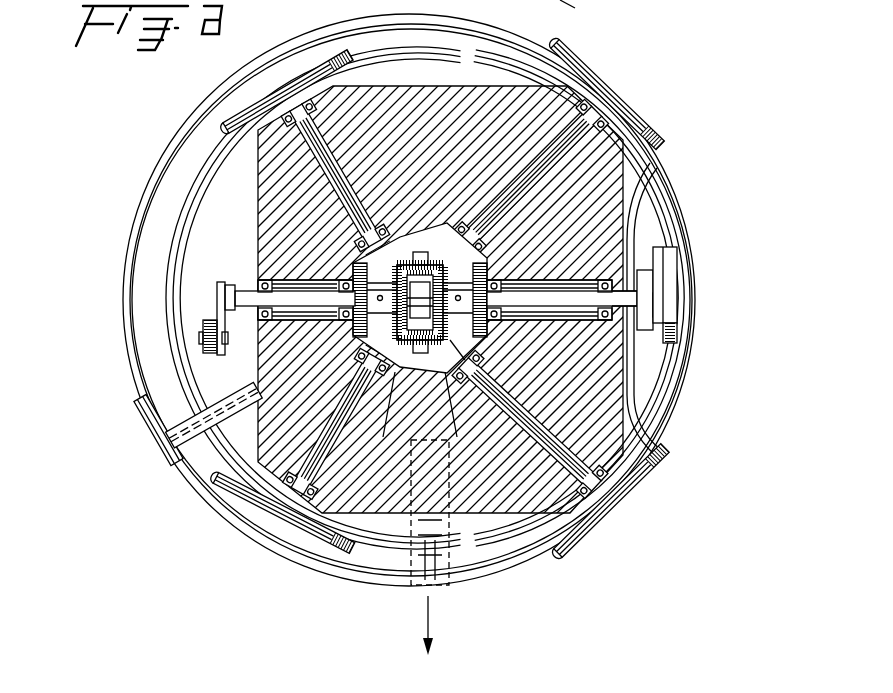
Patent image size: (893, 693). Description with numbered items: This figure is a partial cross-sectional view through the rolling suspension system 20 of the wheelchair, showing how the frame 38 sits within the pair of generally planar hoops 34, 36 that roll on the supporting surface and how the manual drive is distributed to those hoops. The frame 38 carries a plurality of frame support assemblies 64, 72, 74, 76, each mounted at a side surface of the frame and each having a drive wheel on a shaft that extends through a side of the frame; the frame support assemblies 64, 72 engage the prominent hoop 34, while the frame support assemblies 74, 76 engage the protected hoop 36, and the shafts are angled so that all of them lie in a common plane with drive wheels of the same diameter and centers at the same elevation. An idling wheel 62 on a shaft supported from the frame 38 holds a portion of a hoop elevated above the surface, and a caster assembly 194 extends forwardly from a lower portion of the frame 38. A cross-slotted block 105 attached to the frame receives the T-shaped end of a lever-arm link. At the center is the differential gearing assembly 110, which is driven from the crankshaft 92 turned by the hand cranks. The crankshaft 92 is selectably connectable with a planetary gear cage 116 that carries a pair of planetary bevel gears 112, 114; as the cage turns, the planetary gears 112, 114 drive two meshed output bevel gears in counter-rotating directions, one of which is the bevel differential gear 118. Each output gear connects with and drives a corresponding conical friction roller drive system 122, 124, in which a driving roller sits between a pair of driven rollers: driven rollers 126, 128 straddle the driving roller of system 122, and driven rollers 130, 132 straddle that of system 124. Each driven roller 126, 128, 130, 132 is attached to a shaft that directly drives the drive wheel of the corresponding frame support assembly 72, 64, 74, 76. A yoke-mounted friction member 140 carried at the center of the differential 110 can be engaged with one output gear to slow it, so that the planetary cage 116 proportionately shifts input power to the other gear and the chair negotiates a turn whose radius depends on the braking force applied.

The rolling suspension system 20 is at (500, 580).
The prominent hoop 34 is at (130, 222).
The protected hoop 36 is at (195, 198).
The frame 38 is at (626, 400).
The idling wheel 62 is at (145, 436).
The frame support assembly 64 is at (582, 548).
The frame support assembly 72 is at (640, 108).
The frame support assembly 74 is at (228, 117).
The frame support assembly 76 is at (253, 500).
The crankshaft 92 is at (302, 285).
The cross-slotted block 105 is at (585, 2).
The differential gearing assembly 110 is at (423, 207).
The planetary bevel gear 112 is at (458, 362).
The planetary bevel gear 114 is at (627, 203).
The planetary gear cage 116 is at (452, 230).
The bevel differential gear 118 is at (655, 276).
The conical friction roller drive system 122 is at (493, 318).
The conical friction roller drive system 124 is at (350, 278).
The driven roller 126 is at (490, 256).
The driven roller 128 is at (655, 455).
The driven roller 130 is at (423, 253).
The driven roller 132 is at (258, 440).
The yoke-mounted friction member 140 is at (408, 372).
The caster assembly 194 is at (408, 582).